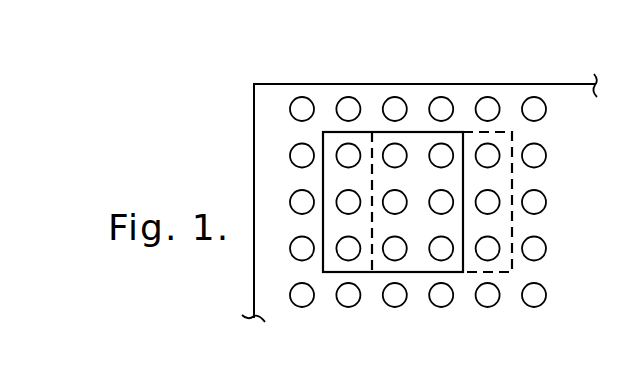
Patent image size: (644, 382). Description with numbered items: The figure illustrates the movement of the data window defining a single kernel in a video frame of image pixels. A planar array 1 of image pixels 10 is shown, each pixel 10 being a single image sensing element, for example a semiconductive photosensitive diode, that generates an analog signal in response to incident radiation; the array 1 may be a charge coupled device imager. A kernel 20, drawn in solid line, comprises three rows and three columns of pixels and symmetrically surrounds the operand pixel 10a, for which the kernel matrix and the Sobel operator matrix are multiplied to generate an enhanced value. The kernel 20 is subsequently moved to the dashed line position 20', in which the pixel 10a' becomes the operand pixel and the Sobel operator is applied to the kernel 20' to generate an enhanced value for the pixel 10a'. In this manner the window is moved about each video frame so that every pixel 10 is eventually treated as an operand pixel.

The planar array 1 is at (295, 84).
The image pixel 10 is at (451, 104).
The operand pixel 10a is at (424, 132).
The operand pixel in moved kernel position 10a' is at (496, 132).
The kernel 20 is at (393, 161).
The dashed line kernel position 20' is at (483, 153).